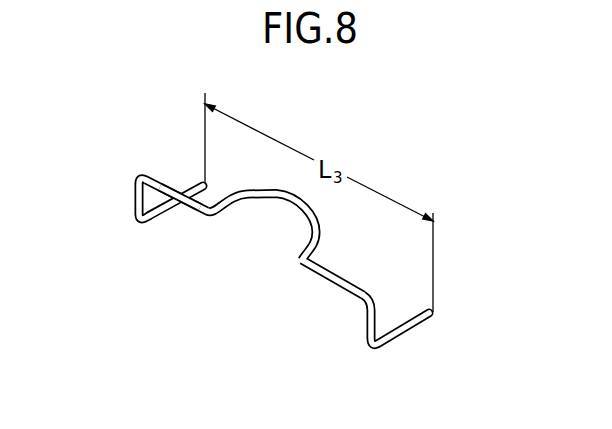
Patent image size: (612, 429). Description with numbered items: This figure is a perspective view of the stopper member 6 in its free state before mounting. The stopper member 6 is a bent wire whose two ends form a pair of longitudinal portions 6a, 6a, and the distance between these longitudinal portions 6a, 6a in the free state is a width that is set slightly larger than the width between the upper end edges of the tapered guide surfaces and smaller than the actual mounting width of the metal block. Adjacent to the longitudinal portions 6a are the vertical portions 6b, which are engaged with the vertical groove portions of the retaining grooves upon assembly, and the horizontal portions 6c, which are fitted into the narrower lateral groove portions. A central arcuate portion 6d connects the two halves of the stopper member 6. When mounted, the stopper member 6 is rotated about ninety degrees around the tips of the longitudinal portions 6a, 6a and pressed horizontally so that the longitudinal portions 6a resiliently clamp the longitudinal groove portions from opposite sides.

The stopper member 6 is at (258, 262).
The longitudinal portions 6a is at (170, 209).
The vertical portions 6b is at (134, 200).
The horizontal portions 6c is at (167, 189).
The arcuate portion 6d is at (287, 203).